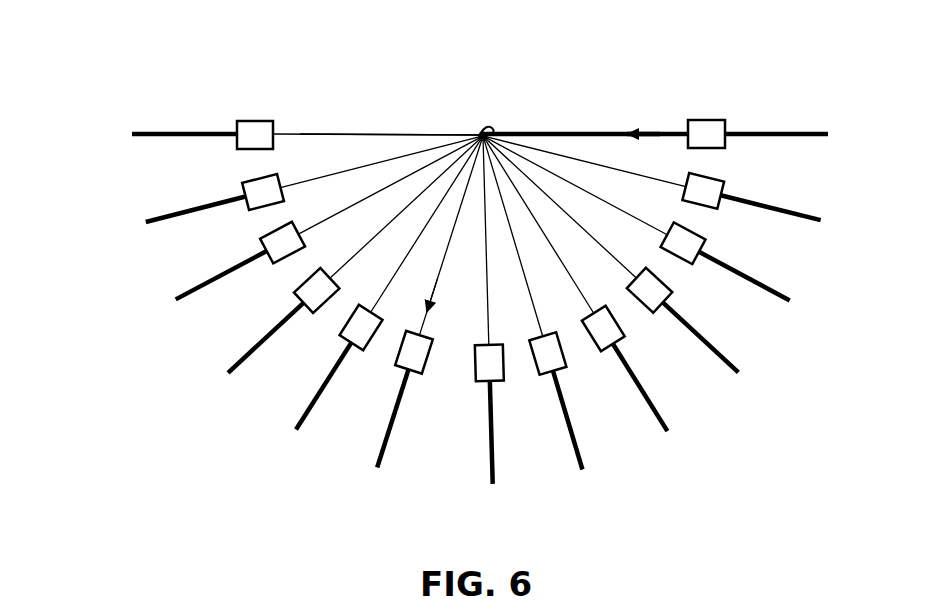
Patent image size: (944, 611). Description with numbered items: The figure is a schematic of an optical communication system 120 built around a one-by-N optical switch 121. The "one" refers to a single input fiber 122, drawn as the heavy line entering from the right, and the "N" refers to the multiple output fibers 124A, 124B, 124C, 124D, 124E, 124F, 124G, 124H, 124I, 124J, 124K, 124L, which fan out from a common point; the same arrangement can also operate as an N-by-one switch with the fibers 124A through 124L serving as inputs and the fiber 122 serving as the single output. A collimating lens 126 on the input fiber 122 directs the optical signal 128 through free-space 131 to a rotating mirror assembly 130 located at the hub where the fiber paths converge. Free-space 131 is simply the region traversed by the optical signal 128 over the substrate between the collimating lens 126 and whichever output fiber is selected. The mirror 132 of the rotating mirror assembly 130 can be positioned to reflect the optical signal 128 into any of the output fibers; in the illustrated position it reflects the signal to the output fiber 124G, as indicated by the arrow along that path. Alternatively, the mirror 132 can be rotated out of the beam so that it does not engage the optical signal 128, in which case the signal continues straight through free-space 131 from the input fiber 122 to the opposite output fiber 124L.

The optical communication system 120 is at (316, 86).
The 1×N optical switch 121 is at (522, 128).
The input fiber 122 is at (782, 110).
The output fiber 124A is at (790, 215).
The output fiber 124B is at (755, 290).
The output fiber 124C is at (712, 352).
The output fiber 124D is at (648, 408).
The output fiber 124E is at (575, 445).
The output fiber 124F is at (488, 460).
The output fiber 124G is at (383, 452).
The output fiber 124H is at (308, 400).
The output fiber 124I is at (243, 353).
The output fiber 124J is at (193, 288).
The output fiber 124K is at (170, 215).
The output fiber 124L is at (155, 138).
The collimating lens 126 is at (686, 120).
The optical signal 128 is at (598, 132).
The rotating mirror assembly 130 is at (455, 116).
The free-space 131 is at (392, 128).
The mirror 132 is at (488, 130).